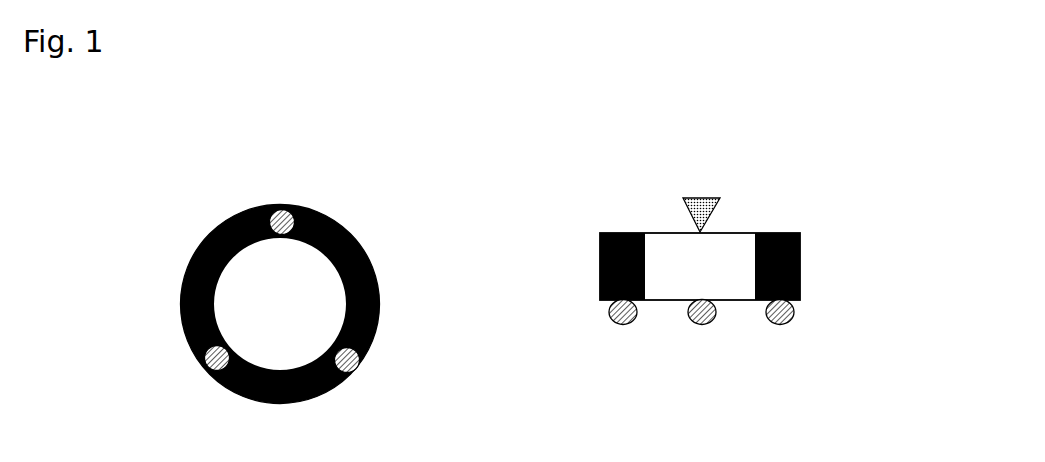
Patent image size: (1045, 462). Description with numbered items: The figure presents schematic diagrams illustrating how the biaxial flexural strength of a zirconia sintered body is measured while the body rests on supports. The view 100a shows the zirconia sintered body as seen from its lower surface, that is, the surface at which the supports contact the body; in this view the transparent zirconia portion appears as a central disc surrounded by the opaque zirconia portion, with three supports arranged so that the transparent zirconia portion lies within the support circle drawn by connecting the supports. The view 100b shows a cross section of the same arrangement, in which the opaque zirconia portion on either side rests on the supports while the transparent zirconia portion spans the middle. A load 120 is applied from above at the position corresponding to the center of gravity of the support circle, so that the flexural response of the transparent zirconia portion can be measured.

The view from the lower surface 100a is at (113, 136).
The cross-sectional view 100b is at (557, 144).
The load 120 is at (735, 212).